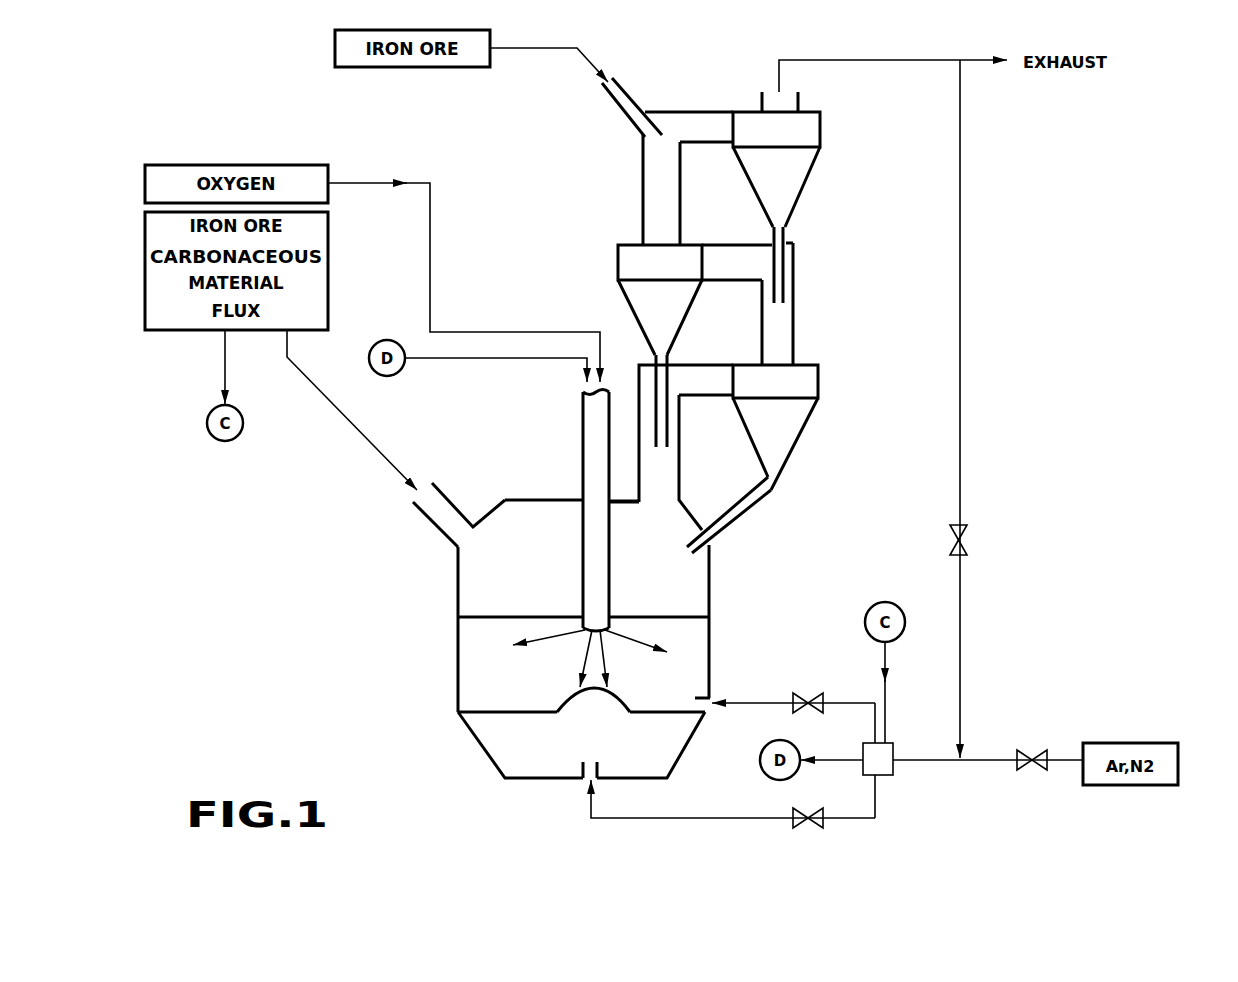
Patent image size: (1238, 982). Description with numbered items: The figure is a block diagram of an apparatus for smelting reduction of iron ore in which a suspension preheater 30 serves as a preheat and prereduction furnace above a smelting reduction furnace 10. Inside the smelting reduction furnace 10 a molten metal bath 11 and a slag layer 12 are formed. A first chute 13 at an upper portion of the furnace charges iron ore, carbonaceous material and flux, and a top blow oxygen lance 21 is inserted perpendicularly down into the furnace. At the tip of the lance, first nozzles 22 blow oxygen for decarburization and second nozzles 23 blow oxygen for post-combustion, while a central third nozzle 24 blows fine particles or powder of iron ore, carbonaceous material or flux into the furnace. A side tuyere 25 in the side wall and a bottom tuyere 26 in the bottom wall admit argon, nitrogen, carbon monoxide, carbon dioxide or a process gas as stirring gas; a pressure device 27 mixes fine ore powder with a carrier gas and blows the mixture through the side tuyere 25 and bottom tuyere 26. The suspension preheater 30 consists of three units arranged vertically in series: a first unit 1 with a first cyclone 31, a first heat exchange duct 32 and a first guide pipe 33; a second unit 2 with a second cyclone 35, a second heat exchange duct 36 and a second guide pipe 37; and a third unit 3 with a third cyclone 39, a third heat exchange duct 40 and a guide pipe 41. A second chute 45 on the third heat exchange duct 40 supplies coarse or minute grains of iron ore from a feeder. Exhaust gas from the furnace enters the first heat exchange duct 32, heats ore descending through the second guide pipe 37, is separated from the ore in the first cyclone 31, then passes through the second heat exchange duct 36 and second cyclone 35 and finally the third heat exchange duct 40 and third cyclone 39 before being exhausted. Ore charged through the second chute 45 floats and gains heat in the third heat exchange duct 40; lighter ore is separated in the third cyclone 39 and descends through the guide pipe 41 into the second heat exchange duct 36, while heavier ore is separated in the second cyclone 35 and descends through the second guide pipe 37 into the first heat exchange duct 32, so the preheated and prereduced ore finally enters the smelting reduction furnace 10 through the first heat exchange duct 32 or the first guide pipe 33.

The first unit 1 is at (827, 445).
The second unit 2 is at (600, 310).
The third unit 3 is at (822, 172).
The smelting reduction furnace 10 is at (438, 627).
The molten metal bath 11 is at (492, 732).
The slag layer 12 is at (468, 692).
The first chute 13 is at (430, 520).
The top blow oxygen lance 21 is at (583, 437).
The first nozzles 22 is at (582, 638).
The second nozzles 23 is at (608, 618).
The third nozzle 24 is at (607, 640).
The side tuyere 25 is at (710, 698).
The bottom tuyere 26 is at (583, 787).
The pressure device 27 is at (893, 768).
The suspension preheater 30 is at (572, 215).
The first cyclone 31 is at (818, 382).
The first heat exchange duct 32 is at (682, 447).
The first guide pipe 33 is at (750, 510).
The second cyclone 35 is at (618, 267).
The second heat exchange duct 36 is at (795, 290).
The second guide pipe 37 is at (655, 355).
The third cyclone 39 is at (820, 122).
The third heat exchange duct 40 is at (643, 175).
The guide pipe of unit 3 41 is at (785, 232).
The second chute 45 is at (630, 90).